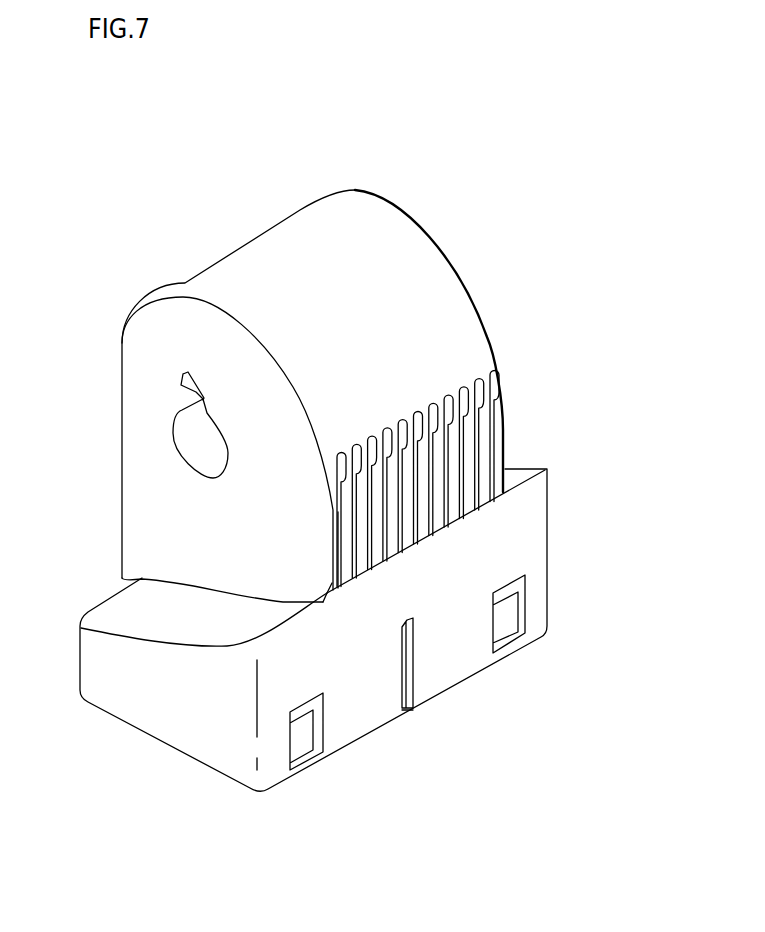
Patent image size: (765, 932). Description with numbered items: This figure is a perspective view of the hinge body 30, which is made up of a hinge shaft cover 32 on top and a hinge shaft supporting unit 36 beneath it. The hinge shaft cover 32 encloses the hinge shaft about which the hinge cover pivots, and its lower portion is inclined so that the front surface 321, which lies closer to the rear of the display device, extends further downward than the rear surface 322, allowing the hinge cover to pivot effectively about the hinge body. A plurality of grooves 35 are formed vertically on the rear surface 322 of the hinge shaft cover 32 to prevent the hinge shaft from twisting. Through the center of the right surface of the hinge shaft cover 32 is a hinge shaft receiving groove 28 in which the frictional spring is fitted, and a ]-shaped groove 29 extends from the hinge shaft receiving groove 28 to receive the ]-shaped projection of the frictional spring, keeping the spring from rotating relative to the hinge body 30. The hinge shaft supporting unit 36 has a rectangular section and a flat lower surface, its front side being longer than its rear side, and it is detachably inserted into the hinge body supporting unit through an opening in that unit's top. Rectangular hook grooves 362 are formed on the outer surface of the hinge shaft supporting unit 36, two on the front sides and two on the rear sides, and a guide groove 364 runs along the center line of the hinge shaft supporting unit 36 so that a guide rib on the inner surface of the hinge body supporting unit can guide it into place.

The hinge body 30 is at (437, 162).
The hinge shaft cover 32 is at (400, 270).
The front surface 321 is at (122, 418).
The rear surface 322 is at (480, 357).
The grooves 35 is at (480, 438).
The hinge shaft receiving groove 28 is at (198, 440).
The ]-shaped groove 29 is at (182, 387).
The hinge shaft supporting unit 36 is at (123, 688).
The hook grooves 362 is at (305, 738).
The guide groove 364 is at (410, 685).